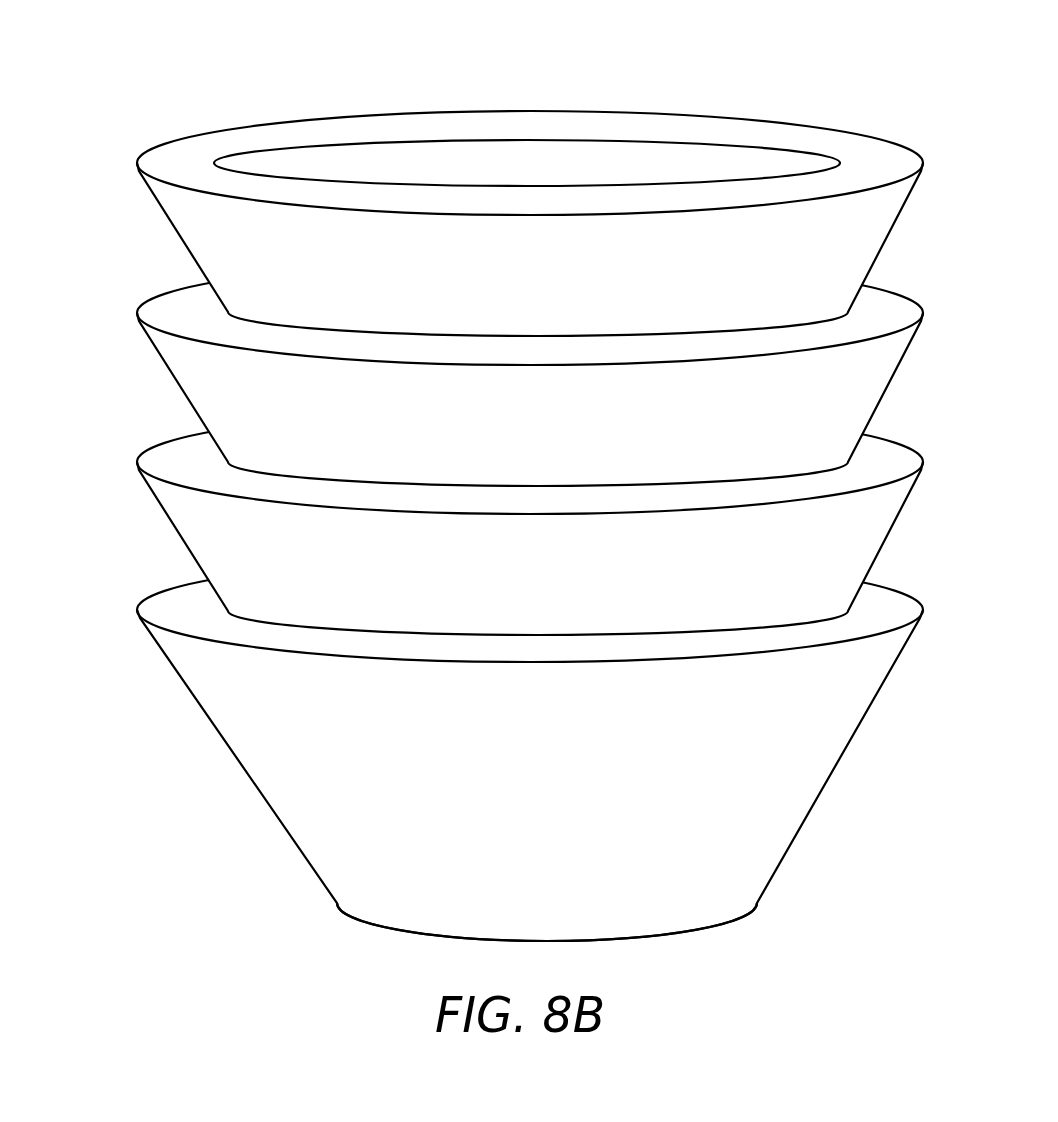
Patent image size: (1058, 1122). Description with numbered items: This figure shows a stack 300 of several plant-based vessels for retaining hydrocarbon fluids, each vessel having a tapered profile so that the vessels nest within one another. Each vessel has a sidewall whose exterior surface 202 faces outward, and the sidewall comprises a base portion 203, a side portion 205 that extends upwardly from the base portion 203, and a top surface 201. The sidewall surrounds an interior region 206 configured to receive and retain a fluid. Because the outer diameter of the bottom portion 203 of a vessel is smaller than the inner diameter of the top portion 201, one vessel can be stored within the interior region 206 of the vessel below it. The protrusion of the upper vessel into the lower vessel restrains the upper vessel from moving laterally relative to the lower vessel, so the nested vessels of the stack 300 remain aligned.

The stack of nested containers 300 is at (153, 83).
The top surface 201 is at (873, 160).
The exterior surface 202 is at (178, 383).
The base portion 203 is at (488, 913).
The side portion 205 is at (260, 723).
The interior region 206 is at (530, 152).